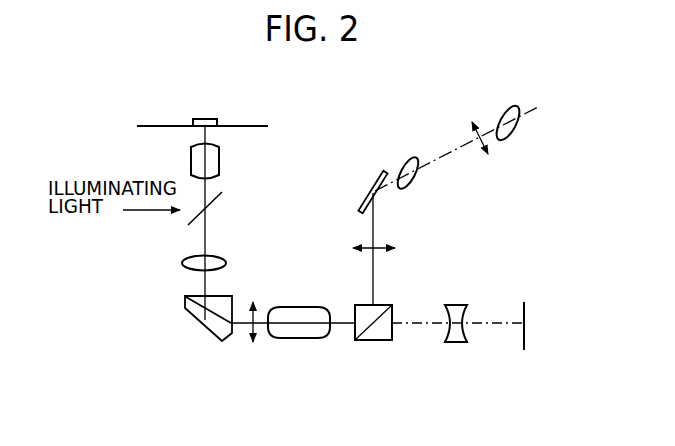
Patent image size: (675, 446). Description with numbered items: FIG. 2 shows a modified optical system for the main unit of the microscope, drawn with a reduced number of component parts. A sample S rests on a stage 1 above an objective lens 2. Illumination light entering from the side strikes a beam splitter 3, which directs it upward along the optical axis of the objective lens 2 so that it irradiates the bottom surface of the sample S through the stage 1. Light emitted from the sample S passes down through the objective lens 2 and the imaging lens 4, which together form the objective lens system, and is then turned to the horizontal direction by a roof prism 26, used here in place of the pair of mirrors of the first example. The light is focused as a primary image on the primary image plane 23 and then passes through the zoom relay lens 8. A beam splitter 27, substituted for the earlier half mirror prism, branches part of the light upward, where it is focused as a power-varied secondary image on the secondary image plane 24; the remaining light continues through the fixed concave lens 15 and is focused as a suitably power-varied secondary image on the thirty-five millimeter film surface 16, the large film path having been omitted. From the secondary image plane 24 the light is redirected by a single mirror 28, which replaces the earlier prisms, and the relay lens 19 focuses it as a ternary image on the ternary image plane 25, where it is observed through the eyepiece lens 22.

The sample S is at (204, 118).
The stage 1 is at (259, 124).
The objective lens 2 is at (219, 161).
The beam splitter 3 is at (211, 202).
The imaging lens 4 is at (226, 260).
The roof prism 26 is at (195, 317).
The primary image plane 23 is at (254, 324).
The zoom relay lens 8 is at (301, 307).
The beam splitter 27 is at (382, 340).
The concave lens 15 is at (456, 342).
The 35 mm film surface 16 is at (527, 307).
The secondary image plane 24 is at (382, 249).
The mirror 28 is at (366, 187).
The relay lens 19 is at (403, 157).
The ternary image plane 25 is at (479, 139).
The eyepiece lens 22 is at (505, 106).